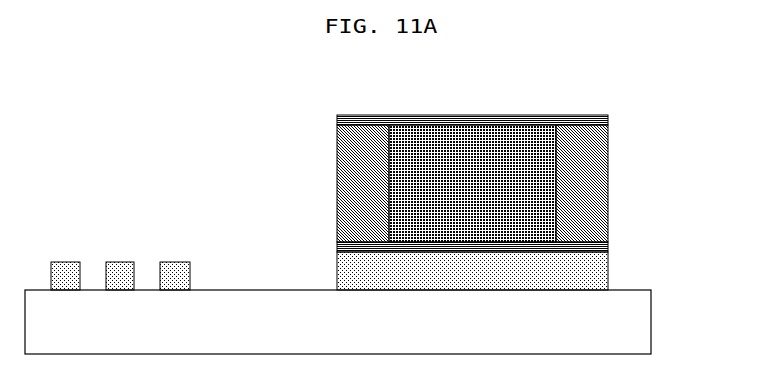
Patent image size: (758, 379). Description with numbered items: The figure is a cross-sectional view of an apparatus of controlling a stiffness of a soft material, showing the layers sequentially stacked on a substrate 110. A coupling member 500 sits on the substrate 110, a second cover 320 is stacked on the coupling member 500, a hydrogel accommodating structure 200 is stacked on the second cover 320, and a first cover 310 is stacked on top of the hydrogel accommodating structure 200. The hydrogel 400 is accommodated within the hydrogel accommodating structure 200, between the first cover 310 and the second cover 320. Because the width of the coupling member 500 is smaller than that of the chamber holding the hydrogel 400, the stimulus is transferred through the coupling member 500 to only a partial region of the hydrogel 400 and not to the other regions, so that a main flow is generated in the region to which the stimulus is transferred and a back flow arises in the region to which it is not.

The substrate 110 is at (652, 307).
The hydrogel accommodating structure 200 is at (608, 162).
The first cover 310 is at (595, 112).
The second cover 320 is at (608, 233).
The hydrogel 400 is at (472, 148).
The coupling member 500 is at (608, 270).